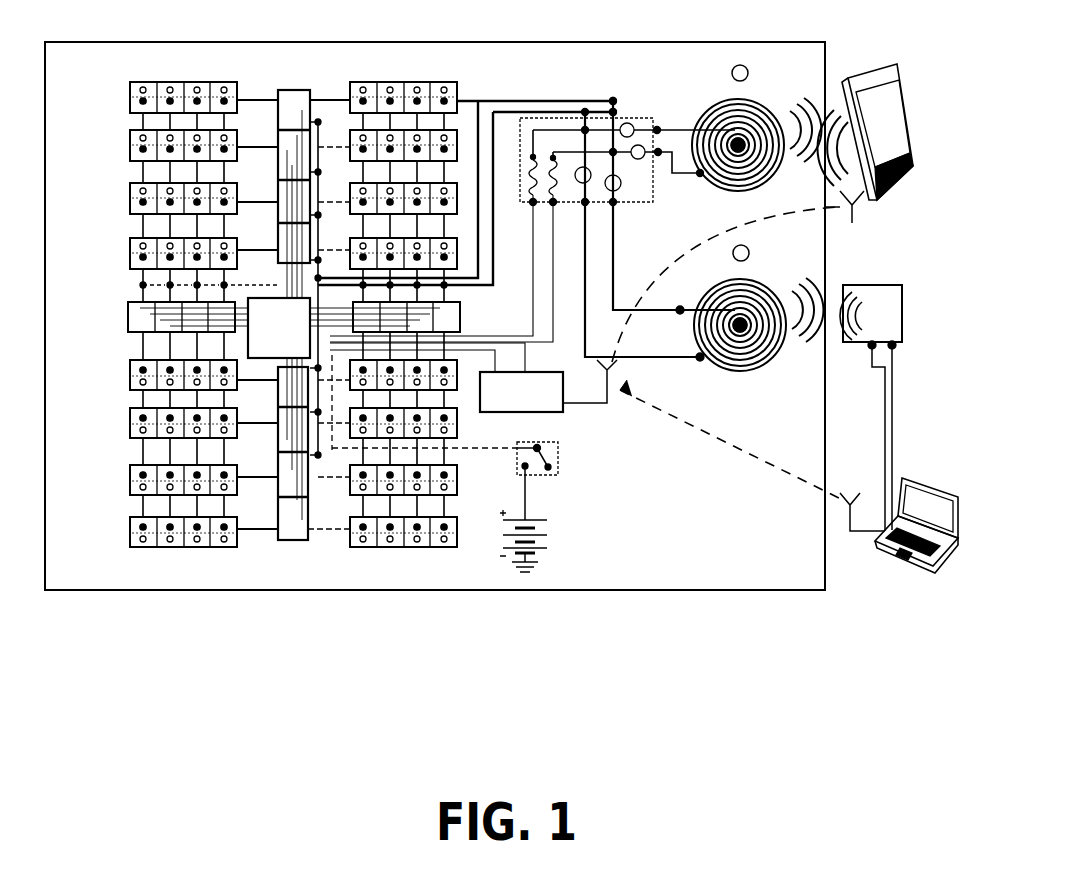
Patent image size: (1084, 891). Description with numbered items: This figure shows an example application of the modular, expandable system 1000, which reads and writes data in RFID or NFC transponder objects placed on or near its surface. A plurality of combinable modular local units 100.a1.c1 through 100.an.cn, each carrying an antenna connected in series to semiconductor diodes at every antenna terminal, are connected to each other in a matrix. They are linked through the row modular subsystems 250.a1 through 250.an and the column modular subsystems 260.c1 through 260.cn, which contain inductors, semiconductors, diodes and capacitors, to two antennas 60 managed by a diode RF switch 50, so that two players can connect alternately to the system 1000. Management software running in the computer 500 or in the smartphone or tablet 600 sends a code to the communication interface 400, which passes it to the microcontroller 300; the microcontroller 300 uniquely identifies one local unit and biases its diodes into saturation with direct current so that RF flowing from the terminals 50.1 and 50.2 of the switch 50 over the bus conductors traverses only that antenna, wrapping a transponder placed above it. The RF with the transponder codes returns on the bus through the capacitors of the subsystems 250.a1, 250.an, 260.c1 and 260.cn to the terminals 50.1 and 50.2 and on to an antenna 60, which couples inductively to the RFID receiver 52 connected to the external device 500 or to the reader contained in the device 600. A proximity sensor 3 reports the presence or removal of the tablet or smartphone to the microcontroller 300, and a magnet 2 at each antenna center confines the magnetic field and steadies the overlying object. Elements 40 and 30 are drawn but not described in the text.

The system 1000 is at (830, 62).
The modular local unit 100.an.cn is at (137, 81).
The modular local unit 100.a1.c1 is at (466, 572).
The modular subsystem 260.cn is at (296, 96).
The modular subsystem 260.c1 is at (291, 536).
The modular subsystem 250.an is at (140, 318).
The modular subsystem 250.a1 is at (500, 312).
The microcontroller 300 is at (279, 328).
The communication interface 400 is at (473, 377).
The RF switch 50 is at (641, 189).
The switch terminal 50.1 is at (594, 99).
The switch terminal 50.2 is at (628, 110).
The antenna 60 is at (764, 91).
The proximity sensor 3 is at (751, 66).
The magnet 2 is at (745, 152).
The switch 40 is at (566, 459).
The battery 30 is at (538, 541).
The smartphone or tablet 600 is at (891, 201).
The RFID receiver (reader) 52 is at (871, 408).
The computer 500 is at (905, 564).